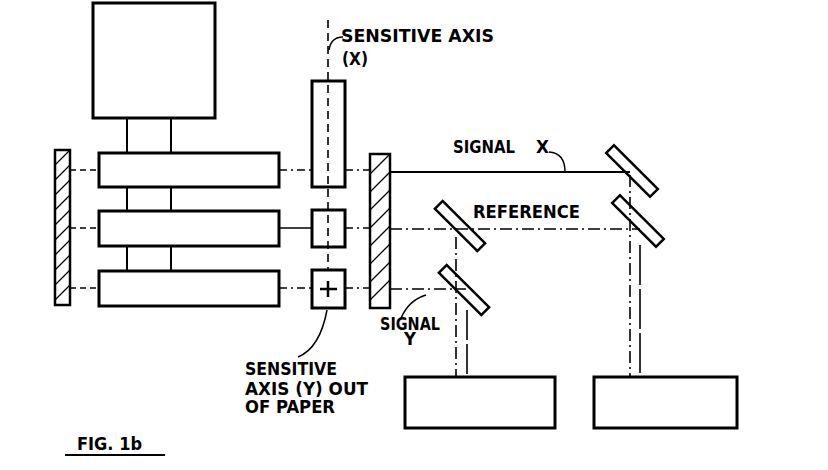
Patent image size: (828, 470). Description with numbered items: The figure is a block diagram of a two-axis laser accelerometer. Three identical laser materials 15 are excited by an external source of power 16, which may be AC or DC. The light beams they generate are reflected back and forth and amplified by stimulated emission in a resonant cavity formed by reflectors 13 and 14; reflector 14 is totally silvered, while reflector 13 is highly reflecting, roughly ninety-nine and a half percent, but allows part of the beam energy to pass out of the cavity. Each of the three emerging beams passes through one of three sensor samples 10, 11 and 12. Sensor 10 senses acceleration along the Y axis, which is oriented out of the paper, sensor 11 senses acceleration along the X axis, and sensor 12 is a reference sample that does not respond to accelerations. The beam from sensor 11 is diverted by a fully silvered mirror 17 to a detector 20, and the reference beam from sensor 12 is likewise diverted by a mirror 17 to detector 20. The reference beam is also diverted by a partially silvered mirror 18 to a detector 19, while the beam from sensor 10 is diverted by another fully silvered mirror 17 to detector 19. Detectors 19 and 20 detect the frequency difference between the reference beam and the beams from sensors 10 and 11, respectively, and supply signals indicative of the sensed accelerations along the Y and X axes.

The sensor sample 10 is at (322, 276).
The sensor sample 11 is at (322, 112).
The reference sample 12 is at (322, 223).
The reflector 13 is at (381, 253).
The reflector 14 is at (58, 285).
The laser material 15 is at (157, 218).
The external source of power 16 is at (106, 93).
The fully silvered mirror 17 is at (482, 303).
The partially silvered mirror 18 is at (470, 244).
The detector 19 is at (505, 417).
The detector 20 is at (673, 420).